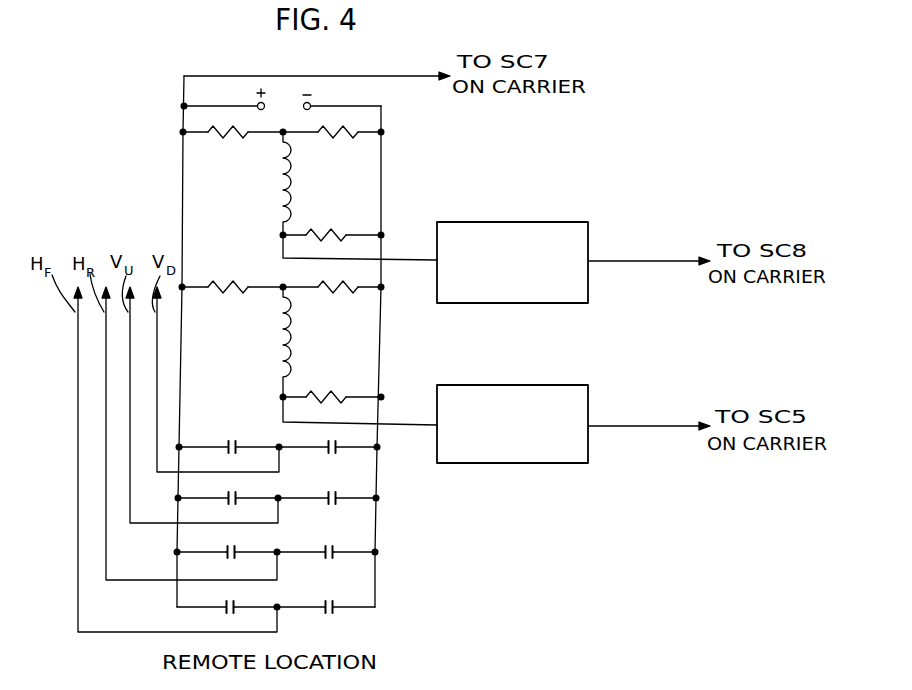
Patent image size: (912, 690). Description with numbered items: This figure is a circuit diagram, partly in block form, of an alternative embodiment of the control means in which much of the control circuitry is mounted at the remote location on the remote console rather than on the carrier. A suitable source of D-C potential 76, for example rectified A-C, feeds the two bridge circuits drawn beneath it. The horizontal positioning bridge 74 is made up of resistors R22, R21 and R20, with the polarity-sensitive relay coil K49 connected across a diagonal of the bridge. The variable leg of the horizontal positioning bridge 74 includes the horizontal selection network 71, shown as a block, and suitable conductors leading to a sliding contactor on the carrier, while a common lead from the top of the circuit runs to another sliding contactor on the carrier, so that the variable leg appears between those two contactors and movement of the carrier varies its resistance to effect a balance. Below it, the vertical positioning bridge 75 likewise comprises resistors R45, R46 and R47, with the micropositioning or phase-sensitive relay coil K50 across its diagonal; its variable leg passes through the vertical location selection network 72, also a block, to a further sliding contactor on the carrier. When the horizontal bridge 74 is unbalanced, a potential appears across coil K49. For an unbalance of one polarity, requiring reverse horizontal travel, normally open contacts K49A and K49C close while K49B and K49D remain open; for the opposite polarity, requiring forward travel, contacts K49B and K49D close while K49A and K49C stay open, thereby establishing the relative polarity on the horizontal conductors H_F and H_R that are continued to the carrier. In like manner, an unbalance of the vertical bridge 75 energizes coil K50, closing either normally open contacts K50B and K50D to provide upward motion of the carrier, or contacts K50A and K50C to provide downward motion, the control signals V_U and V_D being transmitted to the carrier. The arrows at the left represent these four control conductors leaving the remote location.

The source of D-C potential 76 is at (302, 116).
The horizontal positioning bridge 74 is at (245, 217).
The vertical positioning bridge 75 is at (245, 364).
The resistor R22 is at (232, 139).
The resistor R21 is at (348, 139).
The resistor R20 is at (344, 214).
The polarity-sensitive relay coil K49 is at (291, 180).
The resistor R45 is at (242, 282).
The resistor R46 is at (325, 292).
The resistor R47 is at (320, 393).
The polarity-sensitive relay coil K50 is at (291, 339).
The normally open contact K50A is at (238, 443).
The normally open contact K50B is at (336, 443).
The normally open contact K50C is at (338, 500).
The normally open contact K50D is at (238, 496).
The normally open contact K49A is at (236, 556).
The normally open contact K49B is at (336, 556).
The normally open contact K49C is at (334, 612).
The normally open contact K49D is at (226, 609).
The horizontal selection network 71 is at (507, 221).
The vertical location selection network 72 is at (496, 466).